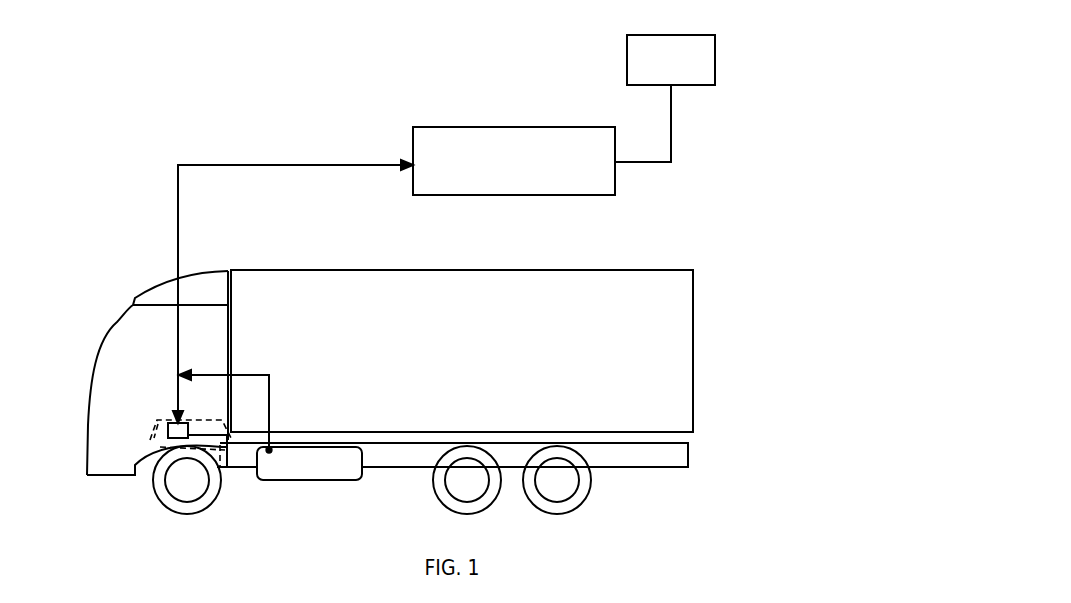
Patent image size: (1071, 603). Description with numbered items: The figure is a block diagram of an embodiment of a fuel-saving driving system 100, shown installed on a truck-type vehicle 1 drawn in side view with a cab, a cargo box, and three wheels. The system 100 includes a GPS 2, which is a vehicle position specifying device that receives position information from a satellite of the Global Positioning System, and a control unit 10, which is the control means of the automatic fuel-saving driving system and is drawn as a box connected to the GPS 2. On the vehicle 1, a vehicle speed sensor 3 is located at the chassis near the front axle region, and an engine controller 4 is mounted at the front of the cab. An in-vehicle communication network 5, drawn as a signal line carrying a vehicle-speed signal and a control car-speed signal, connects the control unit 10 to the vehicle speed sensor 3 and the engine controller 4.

The fuel-saving driving system 100 is at (192, 82).
The vehicle 1 is at (500, 268).
The GPS 2 is at (715, 68).
The vehicle speed sensor 3 is at (272, 452).
The engine controller 4 is at (162, 422).
The in-vehicle communication network 5 is at (212, 165).
The control unit 10 is at (488, 127).